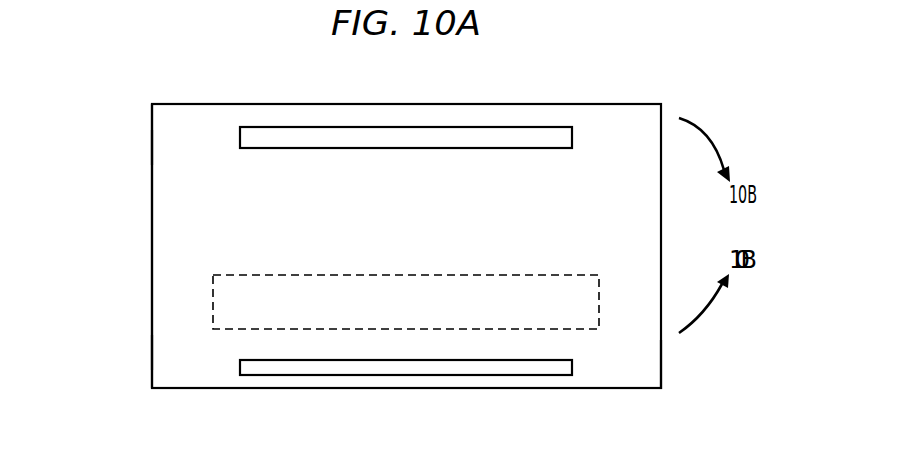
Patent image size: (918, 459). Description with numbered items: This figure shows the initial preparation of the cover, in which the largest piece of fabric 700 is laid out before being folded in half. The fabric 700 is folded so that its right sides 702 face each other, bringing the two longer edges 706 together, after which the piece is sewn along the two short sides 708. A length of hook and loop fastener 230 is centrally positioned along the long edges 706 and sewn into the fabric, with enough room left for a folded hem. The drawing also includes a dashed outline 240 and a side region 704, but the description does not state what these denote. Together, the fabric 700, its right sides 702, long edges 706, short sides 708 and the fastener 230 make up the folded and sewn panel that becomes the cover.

The largest piece of fabric 700 is at (118, 88).
The right sides 702 is at (170, 152).
The side wall 704 is at (152, 230).
The longer edges 706 is at (302, 113).
The short sides 708 is at (652, 373).
The hook and loop fastener 230 is at (416, 135).
The hidden component 240 is at (213, 305).